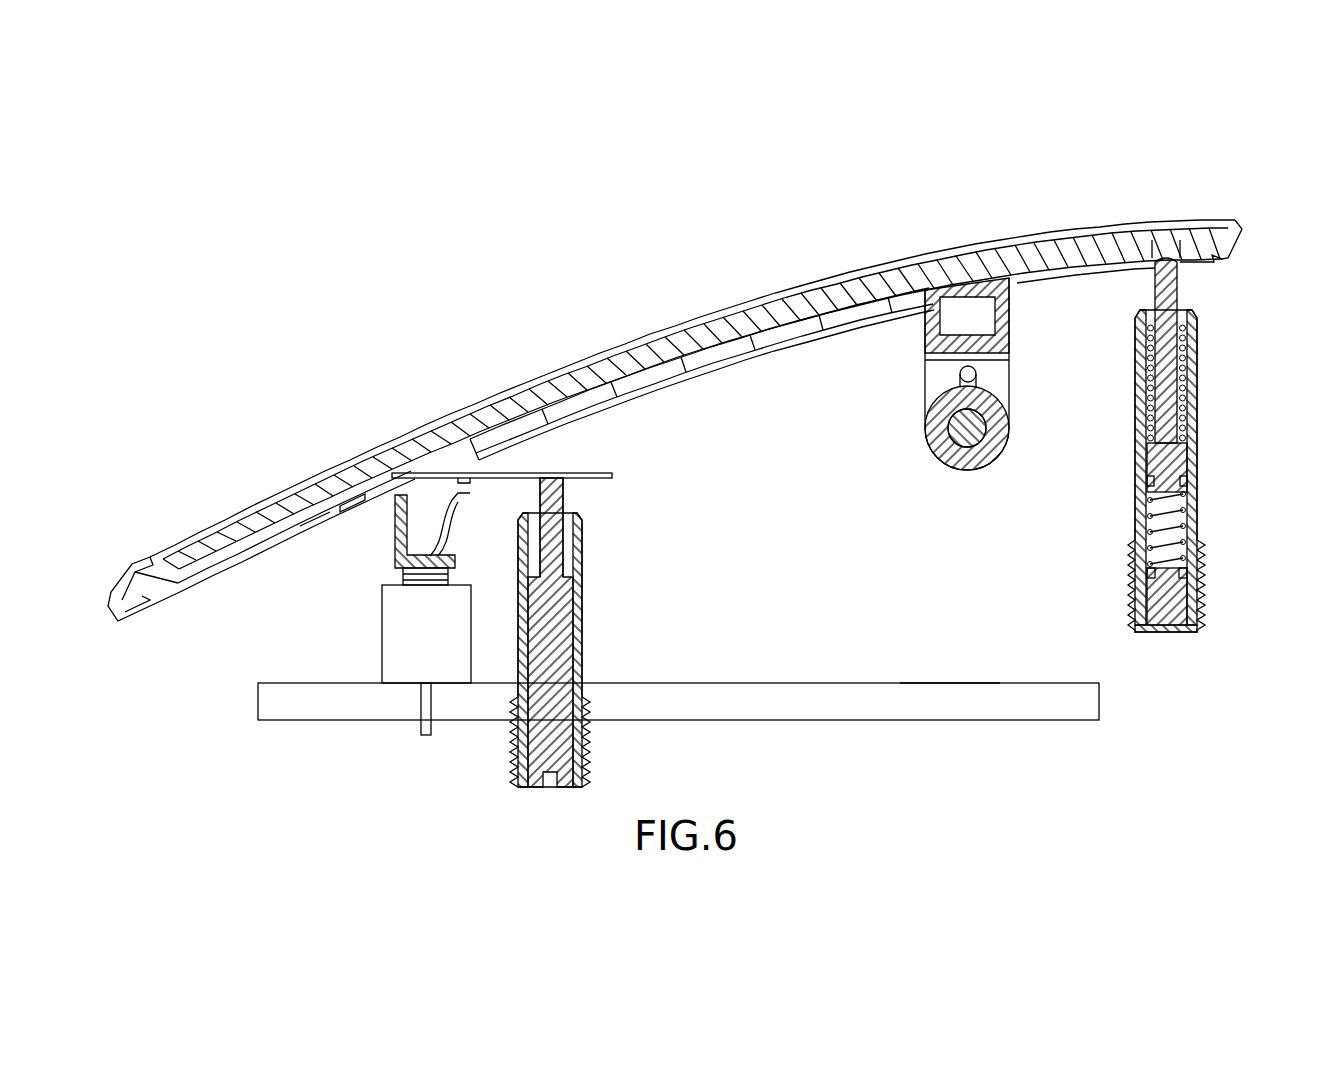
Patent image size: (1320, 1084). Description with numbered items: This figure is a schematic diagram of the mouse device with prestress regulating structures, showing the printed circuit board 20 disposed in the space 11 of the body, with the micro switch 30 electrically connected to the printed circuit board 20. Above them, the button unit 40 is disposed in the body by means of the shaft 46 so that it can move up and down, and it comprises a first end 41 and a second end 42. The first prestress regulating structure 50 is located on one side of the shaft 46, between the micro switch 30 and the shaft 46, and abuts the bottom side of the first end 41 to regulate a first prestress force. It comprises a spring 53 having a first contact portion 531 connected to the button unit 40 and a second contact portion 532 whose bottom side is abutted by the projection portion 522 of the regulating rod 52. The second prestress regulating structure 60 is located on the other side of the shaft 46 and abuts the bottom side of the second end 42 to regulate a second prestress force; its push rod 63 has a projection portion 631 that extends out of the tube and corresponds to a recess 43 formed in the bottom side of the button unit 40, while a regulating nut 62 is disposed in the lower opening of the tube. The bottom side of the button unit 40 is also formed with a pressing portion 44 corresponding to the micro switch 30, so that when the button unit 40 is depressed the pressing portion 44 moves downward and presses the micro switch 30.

The space 11 is at (912, 617).
The printed circuit board 20 is at (786, 676).
The micro switch 30 is at (374, 632).
The button unit 40 is at (675, 382).
The first end 41 is at (402, 445).
The second end 42 is at (1137, 229).
The recess 43 is at (1172, 258).
The pressing portion 44 is at (431, 556).
The shaft 46 is at (967, 443).
The first prestress regulating structure 50 is at (597, 632).
The regulating rod 52 is at (553, 643).
The projection portion 522 is at (548, 483).
The spring 53 is at (540, 471).
The first contact portion 531 is at (350, 512).
The second contact portion 532 is at (584, 479).
The second prestress regulating structure 60 is at (1214, 476).
The regulating nut 62 is at (1166, 612).
The push rod 63 is at (1168, 375).
The projection portion 631 is at (1166, 268).